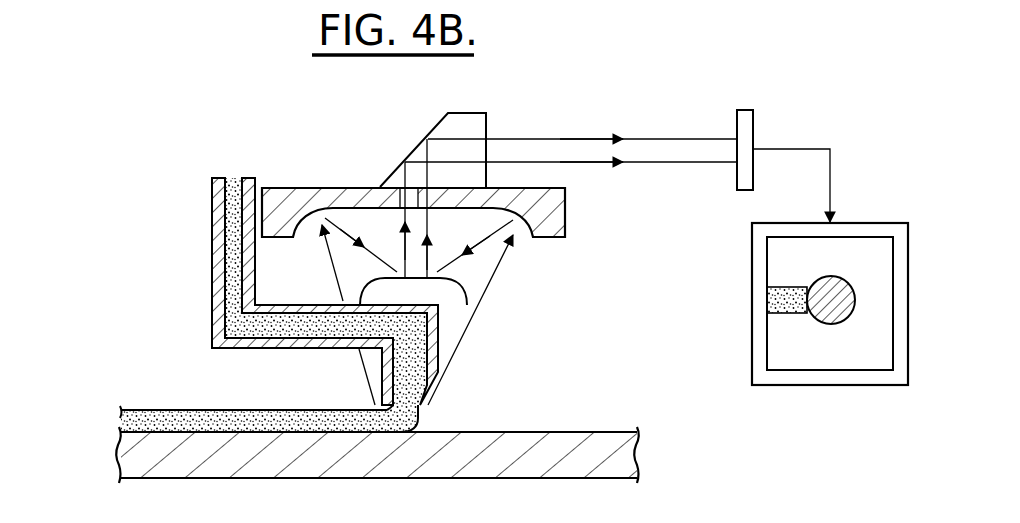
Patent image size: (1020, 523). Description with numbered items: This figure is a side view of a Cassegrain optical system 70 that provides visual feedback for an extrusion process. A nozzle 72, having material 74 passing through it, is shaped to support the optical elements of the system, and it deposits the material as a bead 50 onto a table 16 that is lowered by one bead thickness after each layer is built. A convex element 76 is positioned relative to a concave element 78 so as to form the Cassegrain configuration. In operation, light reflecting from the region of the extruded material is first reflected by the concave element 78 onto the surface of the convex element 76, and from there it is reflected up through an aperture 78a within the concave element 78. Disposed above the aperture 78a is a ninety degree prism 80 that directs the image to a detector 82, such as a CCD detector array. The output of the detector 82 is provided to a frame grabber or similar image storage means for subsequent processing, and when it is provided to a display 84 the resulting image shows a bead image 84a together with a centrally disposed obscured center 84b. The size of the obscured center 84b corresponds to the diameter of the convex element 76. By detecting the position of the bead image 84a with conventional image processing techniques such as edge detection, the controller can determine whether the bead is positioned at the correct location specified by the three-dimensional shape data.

The table 16 is at (137, 452).
The bead 50 is at (163, 412).
The Cassegrain optical system 70 is at (300, 157).
The nozzle 72 is at (212, 235).
The material 74 is at (230, 178).
The convex element 76 is at (457, 288).
The concave element 78 is at (459, 175).
The aperture 78a is at (410, 197).
The 90° prism 80 is at (487, 122).
The detector 82 is at (737, 110).
The display 84 is at (784, 330).
The bead image 84a is at (788, 310).
The obscured center 84b is at (840, 323).